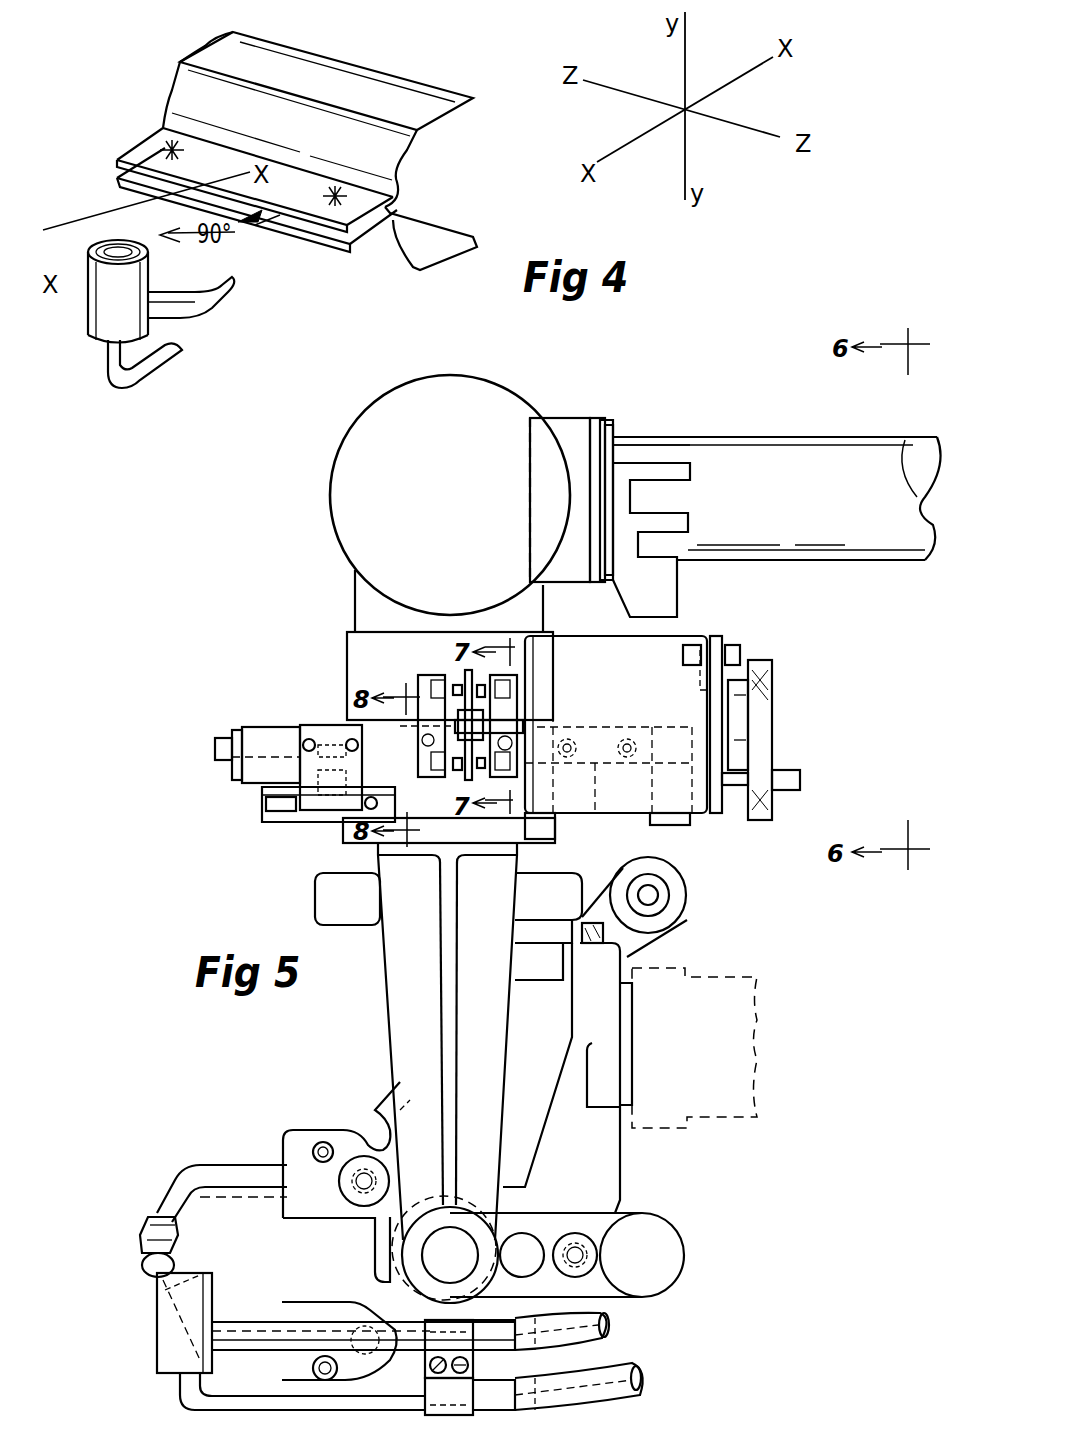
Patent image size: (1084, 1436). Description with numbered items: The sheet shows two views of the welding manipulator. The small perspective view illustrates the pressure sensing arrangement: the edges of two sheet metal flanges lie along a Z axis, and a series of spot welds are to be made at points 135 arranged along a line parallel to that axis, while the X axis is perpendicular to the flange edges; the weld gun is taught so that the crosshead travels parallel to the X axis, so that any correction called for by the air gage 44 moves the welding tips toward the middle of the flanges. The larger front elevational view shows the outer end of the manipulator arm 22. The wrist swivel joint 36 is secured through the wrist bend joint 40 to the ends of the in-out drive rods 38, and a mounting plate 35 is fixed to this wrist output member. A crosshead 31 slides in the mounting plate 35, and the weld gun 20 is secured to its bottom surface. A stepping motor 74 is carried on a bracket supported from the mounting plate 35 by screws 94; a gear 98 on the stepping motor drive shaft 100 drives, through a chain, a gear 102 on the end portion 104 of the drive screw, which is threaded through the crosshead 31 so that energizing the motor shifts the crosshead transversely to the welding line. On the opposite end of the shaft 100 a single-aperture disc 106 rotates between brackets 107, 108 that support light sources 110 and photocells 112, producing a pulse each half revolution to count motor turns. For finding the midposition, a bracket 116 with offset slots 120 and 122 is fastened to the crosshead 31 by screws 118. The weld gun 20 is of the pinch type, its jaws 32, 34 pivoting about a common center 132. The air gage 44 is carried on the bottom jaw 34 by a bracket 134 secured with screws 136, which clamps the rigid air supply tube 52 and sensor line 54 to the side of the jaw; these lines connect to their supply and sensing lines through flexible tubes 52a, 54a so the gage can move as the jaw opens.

In FIG. 4, the spot weld points 135 is at (165, 143).
In FIG. 5, the wrist bend joint 40 is at (322, 430).
In FIG. 5, the in-out drive rods 38 is at (745, 438).
In FIG. 5, the manipulator arm 22 is at (782, 567).
In FIG. 5, the wrist swivel joint 36 is at (345, 655).
In FIG. 5, the crosshead 31 is at (576, 828).
In FIG. 5, the mounting plate 35 is at (250, 727).
In FIG. 5, the offset slot 120 is at (375, 787).
In FIG. 5, the bracket 116 is at (275, 820).
In FIG. 5, the offset slot 122 is at (268, 800).
In FIG. 5, the screws 118 is at (368, 810).
In FIG. 5, the bracket 107 is at (422, 675).
In FIG. 5, the bracket 108 is at (520, 700).
In FIG. 5, the photocells 112 is at (480, 688).
In FIG. 5, the light sources 110 is at (455, 688).
In FIG. 5, the disc 106 is at (467, 778).
In FIG. 5, the stepping motor 74 is at (577, 640).
In FIG. 5, the screws 94 is at (628, 740).
In FIG. 5, the stepping motor drive shaft 100 is at (715, 722).
In FIG. 5, the gear 98 is at (767, 705).
In FIG. 5, the end portion of drive screw 104 is at (800, 780).
In FIG. 5, the gear 102 is at (748, 808).
In FIG. 5, the weld gun 20 is at (641, 1157).
In FIG. 5, the common center 132 is at (462, 1248).
In FIG. 5, the welding jaw 32 is at (214, 1165).
In FIG. 5, the bottom jaw 34 is at (142, 1273).
In FIG. 5, the air gage 44 is at (140, 1329).
In FIG. 5, the air supply tube 52 is at (305, 1320).
In FIG. 5, the sensor line 54 is at (238, 1396).
In FIG. 5, the bracket 134 is at (430, 1365).
In FIG. 5, the screws 136 is at (468, 1365).
In FIG. 5, the flexible tube 52a is at (612, 1323).
In FIG. 5, the flexible tube 54a is at (648, 1380).